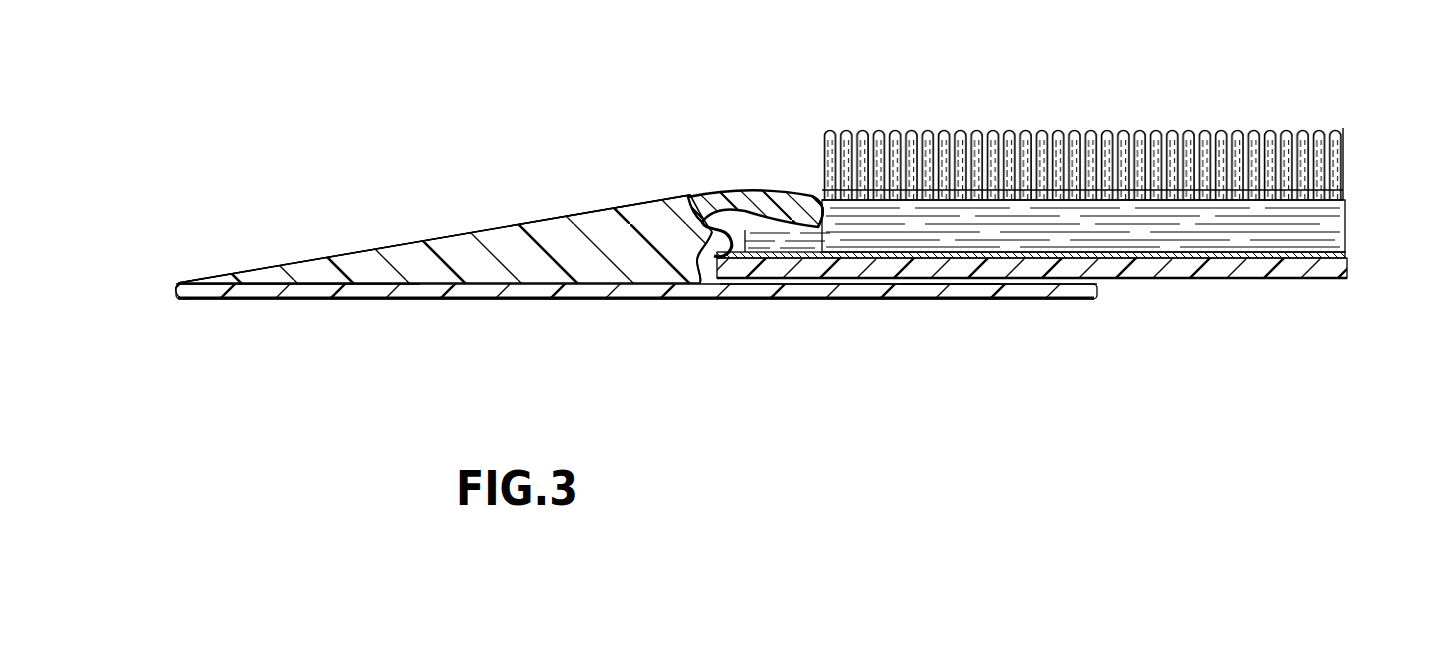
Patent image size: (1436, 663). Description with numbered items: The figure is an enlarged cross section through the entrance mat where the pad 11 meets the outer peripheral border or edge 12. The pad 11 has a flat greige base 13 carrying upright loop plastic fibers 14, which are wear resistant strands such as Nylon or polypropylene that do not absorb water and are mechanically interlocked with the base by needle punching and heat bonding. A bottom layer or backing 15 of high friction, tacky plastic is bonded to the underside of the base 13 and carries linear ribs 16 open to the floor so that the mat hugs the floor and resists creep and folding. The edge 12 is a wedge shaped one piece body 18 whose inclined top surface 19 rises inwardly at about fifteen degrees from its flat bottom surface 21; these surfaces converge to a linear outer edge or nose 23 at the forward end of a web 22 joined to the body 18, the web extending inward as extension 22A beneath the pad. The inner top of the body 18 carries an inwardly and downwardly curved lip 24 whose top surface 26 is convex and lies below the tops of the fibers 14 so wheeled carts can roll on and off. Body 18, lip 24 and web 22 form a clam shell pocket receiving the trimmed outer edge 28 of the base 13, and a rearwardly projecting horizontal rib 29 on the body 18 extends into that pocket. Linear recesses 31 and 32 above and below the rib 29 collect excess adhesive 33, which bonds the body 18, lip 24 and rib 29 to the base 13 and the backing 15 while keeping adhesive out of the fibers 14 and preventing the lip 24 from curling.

The pad 11 is at (1232, 112).
The outer peripheral border or edge 12 is at (463, 188).
The greige base 13 is at (1345, 230).
The upright loop plastic fibers 14 is at (1343, 163).
The bottom layer or backing 15 is at (1226, 294).
The linear ribs 16 is at (1280, 278).
The wedge shaped one piece body 18 is at (562, 205).
The inclined top surface 19 is at (377, 248).
The flat bottom surface 21 is at (502, 298).
The web 22 is at (357, 293).
The linear outer edge or nose 23 is at (175, 287).
The base flange extension 22A is at (838, 290).
The lip 24 is at (752, 200).
The top surface of lip 26 is at (792, 196).
The outer edge of greige base 28 is at (758, 240).
The horizontal rib 29 is at (697, 242).
The linear recess 31 is at (698, 222).
The linear recess 32 is at (645, 285).
The adhesive 33 is at (945, 290).